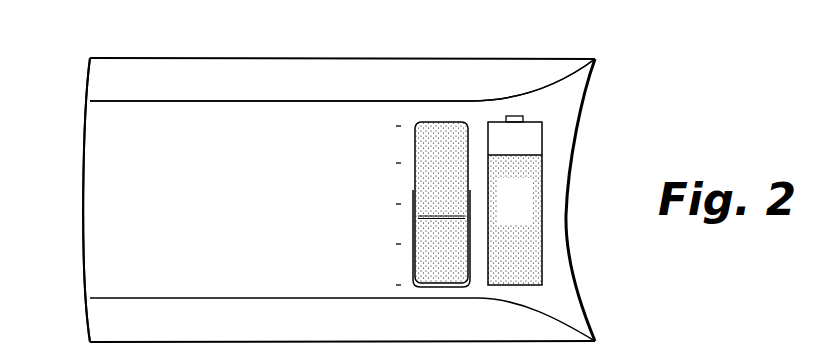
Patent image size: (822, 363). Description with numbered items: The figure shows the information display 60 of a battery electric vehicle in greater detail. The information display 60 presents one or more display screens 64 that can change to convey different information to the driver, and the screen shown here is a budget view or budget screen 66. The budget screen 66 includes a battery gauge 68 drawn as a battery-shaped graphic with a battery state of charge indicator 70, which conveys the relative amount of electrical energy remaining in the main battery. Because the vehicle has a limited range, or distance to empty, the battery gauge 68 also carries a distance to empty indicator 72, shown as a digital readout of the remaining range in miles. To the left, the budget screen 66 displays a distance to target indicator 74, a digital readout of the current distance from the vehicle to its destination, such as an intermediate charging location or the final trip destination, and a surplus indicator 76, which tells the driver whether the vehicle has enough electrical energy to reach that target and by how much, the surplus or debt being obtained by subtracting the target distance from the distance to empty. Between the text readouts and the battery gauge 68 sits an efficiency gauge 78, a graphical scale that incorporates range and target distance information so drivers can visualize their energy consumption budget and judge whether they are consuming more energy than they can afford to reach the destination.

The information display 60 is at (108, 29).
The display screen 64 is at (82, 212).
The budget screen 66 is at (327, 112).
The battery gauge 68 is at (556, 201).
The battery state of charge indicator 70 is at (515, 155).
The distance to empty indicator 72 is at (535, 193).
The distance to target indicator 74 is at (176, 237).
The surplus indicator 76 is at (305, 237).
The efficiency gauge 78 is at (441, 118).